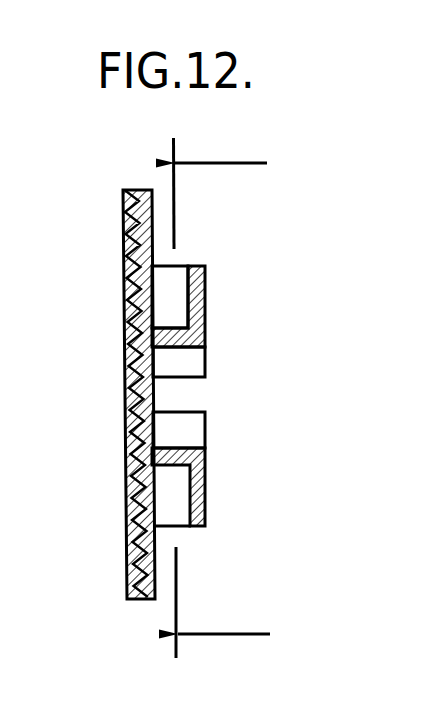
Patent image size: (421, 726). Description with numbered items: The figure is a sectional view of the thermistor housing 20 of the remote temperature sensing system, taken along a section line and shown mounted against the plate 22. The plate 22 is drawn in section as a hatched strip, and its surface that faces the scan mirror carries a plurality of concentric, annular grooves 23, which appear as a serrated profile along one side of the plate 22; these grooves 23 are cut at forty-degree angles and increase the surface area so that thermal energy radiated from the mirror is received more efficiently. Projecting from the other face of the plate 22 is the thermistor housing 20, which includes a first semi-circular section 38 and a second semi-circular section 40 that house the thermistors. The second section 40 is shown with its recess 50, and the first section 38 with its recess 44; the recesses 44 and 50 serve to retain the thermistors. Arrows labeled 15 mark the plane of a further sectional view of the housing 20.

The section line 15- 15 is at (248, 398).
The plate 22 is at (142, 188).
The concentric annular grooves 23 is at (123, 220).
The thermistor housing 20 is at (238, 395).
The recess 50 is at (182, 268).
The second semi-circular section 40 is at (205, 368).
The first semi-circular section 38 is at (207, 490).
The recess 44 is at (176, 519).